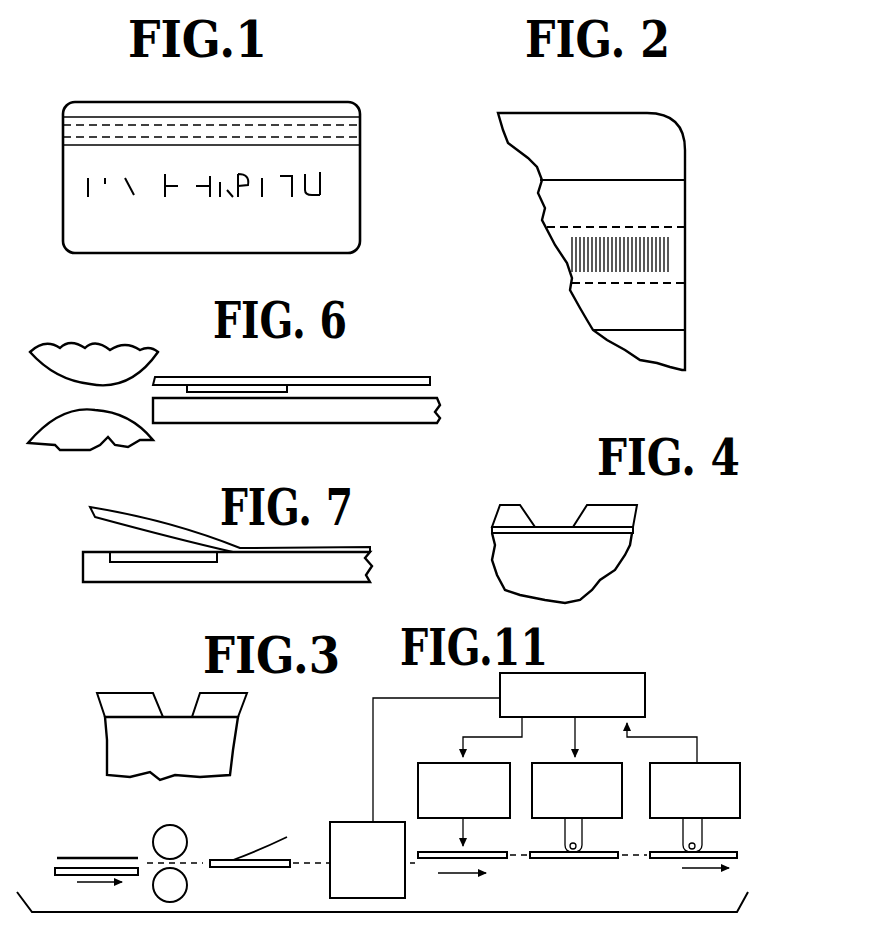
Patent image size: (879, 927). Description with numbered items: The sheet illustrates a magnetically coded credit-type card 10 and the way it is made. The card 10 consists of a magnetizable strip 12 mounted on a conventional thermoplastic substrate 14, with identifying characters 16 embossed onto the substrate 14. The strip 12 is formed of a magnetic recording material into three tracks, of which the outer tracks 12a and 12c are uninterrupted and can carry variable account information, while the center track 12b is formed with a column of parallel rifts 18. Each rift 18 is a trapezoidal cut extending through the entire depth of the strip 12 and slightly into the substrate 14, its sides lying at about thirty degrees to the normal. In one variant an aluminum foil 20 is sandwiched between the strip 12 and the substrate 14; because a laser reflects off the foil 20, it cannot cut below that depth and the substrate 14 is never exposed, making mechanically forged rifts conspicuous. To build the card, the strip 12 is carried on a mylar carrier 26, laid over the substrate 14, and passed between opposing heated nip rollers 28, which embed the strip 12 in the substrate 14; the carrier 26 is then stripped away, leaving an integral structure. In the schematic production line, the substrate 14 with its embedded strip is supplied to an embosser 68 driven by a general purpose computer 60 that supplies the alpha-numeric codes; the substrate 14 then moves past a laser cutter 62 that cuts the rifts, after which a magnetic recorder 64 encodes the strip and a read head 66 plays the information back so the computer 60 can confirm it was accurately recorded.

In FIG. 1, the card 10 is at (64, 259).
In FIG. 2, the card 10 is at (507, 211).
In FIG. 1, the magnetizable strip 12 is at (63, 123).
In FIG. 2, the magnetizable strip 12 is at (538, 195).
In FIG. 6, the magnetizable strip 12 is at (222, 387).
In FIG. 7, the magnetizable strip 12 is at (147, 553).
In FIG. 4, the magnetizable strip 12 is at (510, 510).
In FIG. 3, the magnetizable strip 12 is at (125, 697).
In FIG. 2, the track 12a is at (653, 192).
In FIG. 2, the center track 12b is at (678, 260).
In FIG. 2, the track 12c is at (660, 310).
In FIG. 1, the substrate 14 is at (63, 206).
In FIG. 2, the substrate 14 is at (610, 340).
In FIG. 6, the substrate 14 is at (420, 415).
In FIG. 7, the substrate 14 is at (348, 567).
In FIG. 4, the substrate 14 is at (598, 573).
In FIG. 3, the substrate 14 is at (118, 748).
In FIG. 11, the substrate 14 is at (72, 877).
In FIG. 1, the identifying characters 16 is at (312, 190).
In FIG. 2, the rift 18 is at (582, 240).
In FIG. 4, the rift 18 is at (557, 518).
In FIG. 3, the rift 18 is at (172, 703).
In FIG. 4, the foil 20 is at (613, 527).
In FIG. 6, the mylar carrier 26 is at (395, 380).
In FIG. 7, the mylar carrier 26 is at (143, 518).
In FIG. 11, the mylar carrier 26 is at (88, 855).
In FIG. 6, the nip rollers 28 is at (88, 410).
In FIG. 11, the nip rollers 28 is at (162, 825).
In FIG. 11, the computer 60 is at (630, 673).
In FIG. 11, the laser cutter 62 is at (438, 763).
In FIG. 11, the magnetic recorder 64 is at (558, 735).
In FIG. 11, the read head 66 is at (710, 763).
In FIG. 11, the embosser 68 is at (353, 822).